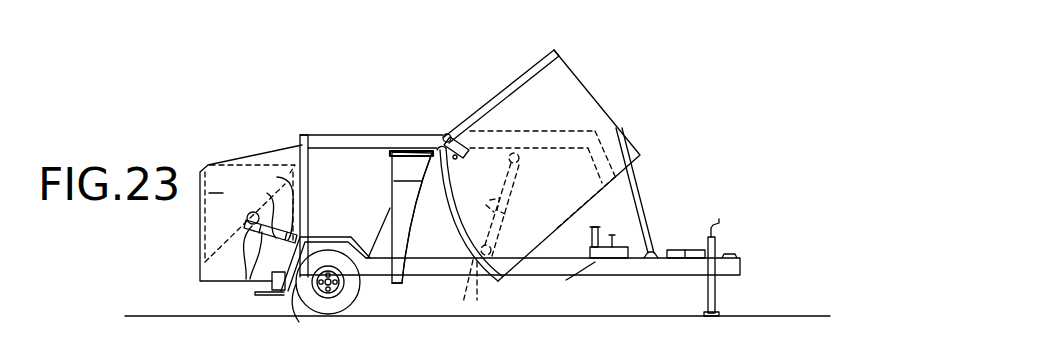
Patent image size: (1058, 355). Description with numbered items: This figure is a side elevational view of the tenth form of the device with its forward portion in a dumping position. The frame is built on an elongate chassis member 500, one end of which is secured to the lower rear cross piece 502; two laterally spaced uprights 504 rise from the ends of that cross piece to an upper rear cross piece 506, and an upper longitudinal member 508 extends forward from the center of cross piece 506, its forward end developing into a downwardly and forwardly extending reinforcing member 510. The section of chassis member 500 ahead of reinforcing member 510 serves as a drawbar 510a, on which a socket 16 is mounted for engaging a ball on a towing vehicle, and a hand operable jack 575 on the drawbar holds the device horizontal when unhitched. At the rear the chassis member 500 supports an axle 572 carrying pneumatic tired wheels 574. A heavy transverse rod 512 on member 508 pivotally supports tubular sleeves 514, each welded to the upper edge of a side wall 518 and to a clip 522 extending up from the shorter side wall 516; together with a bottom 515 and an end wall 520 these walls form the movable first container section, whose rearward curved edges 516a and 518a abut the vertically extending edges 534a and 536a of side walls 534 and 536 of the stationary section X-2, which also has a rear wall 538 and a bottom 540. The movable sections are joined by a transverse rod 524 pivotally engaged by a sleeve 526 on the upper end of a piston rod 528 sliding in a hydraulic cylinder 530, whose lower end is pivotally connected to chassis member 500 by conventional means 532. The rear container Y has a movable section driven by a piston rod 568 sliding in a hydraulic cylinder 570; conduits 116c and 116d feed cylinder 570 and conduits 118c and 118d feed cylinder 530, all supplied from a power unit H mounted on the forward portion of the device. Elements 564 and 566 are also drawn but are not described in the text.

The socket 16 is at (740, 262).
The conduit 116c is at (256, 212).
The conduit 116d is at (268, 205).
The conduit 118c is at (503, 213).
The conduit 118d is at (446, 286).
The elongate chassis member 500 is at (378, 276).
The lower rear cross piece 502 is at (296, 291).
The uprights 504 is at (309, 197).
The upper rear cross piece 506 is at (303, 134).
The upper longitudinal member 508 is at (363, 136).
The reinforcing member 510 is at (640, 205).
The drawbar 510a is at (684, 266).
The transverse rod 512 is at (455, 143).
The tubular sleeves 514 is at (446, 134).
The bottom 515 is at (589, 242).
The side wall 516 is at (596, 188).
The curved edge 516a is at (458, 212).
The side wall 518 is at (532, 82).
The curved edge 518a is at (441, 188).
The end wall 520 is at (612, 120).
The clip 522 is at (455, 158).
The transverse rod 524 is at (521, 158).
The sleeve 526 is at (517, 163).
The piston rod 528 is at (508, 186).
The hydraulic cylinder 530 is at (503, 234).
The conventional means 532 is at (479, 280).
The side wall 534 is at (392, 185).
The vertically extending edge 534a is at (406, 248).
The side wall 536 is at (391, 153).
The vertically extending edge 536a is at (428, 149).
The rear wall 538 is at (389, 228).
The bottom 540 is at (404, 283).
The hydraulic pump unit 564 is at (248, 219).
The pump support 566 is at (231, 252).
The hydraulic cylinder 570 is at (282, 243).
The piston rod 568 is at (256, 293).
The axle 572 is at (327, 288).
The pneumatic tired wheels 574 is at (343, 302).
The hand operable jack 575 is at (718, 284).
The power unit H is at (574, 283).
The container Y is at (215, 184).
The stationary section X-2 is at (408, 173).